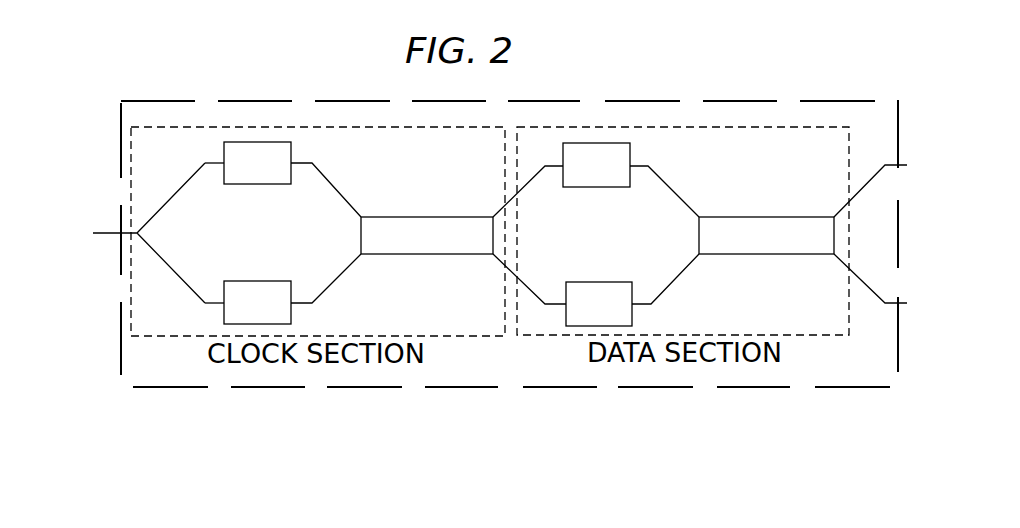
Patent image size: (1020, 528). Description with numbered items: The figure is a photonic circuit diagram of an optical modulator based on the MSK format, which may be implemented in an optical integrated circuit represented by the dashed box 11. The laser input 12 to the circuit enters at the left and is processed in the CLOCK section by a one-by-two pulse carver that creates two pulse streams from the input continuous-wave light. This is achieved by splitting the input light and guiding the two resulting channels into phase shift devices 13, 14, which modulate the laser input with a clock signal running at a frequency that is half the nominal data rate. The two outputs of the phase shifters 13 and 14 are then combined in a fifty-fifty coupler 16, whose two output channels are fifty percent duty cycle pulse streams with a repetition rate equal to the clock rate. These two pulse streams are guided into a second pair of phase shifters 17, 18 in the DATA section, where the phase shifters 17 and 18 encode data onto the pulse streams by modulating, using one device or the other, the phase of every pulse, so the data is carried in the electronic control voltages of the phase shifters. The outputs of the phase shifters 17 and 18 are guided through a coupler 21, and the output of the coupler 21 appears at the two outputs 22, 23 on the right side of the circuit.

The dashed box 11 is at (535, 388).
The laser input 12 is at (64, 233).
The phase shift device 13 is at (262, 185).
The phase shift device 14 is at (263, 281).
The 50-50 coupler 16 is at (412, 255).
The phase shifter 17 is at (599, 188).
The phase shifter 18 is at (602, 282).
The coupler 21 is at (755, 255).
The output of coupler 22 is at (885, 185).
The output of coupler 23 is at (885, 285).